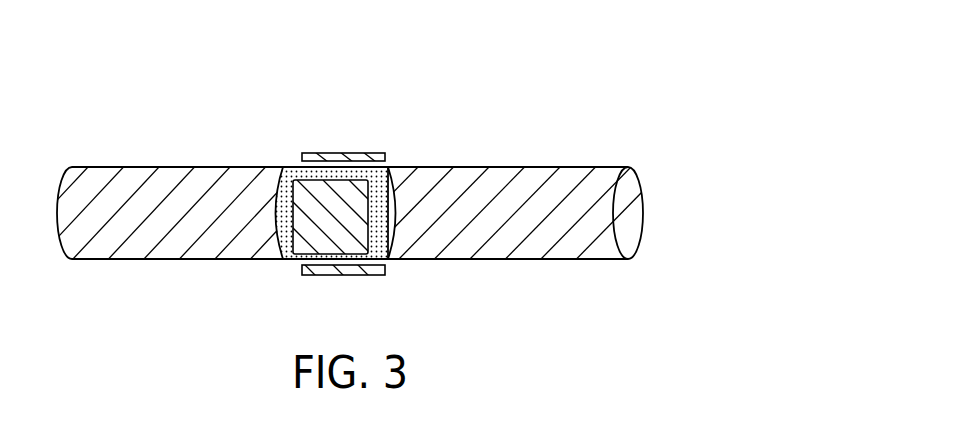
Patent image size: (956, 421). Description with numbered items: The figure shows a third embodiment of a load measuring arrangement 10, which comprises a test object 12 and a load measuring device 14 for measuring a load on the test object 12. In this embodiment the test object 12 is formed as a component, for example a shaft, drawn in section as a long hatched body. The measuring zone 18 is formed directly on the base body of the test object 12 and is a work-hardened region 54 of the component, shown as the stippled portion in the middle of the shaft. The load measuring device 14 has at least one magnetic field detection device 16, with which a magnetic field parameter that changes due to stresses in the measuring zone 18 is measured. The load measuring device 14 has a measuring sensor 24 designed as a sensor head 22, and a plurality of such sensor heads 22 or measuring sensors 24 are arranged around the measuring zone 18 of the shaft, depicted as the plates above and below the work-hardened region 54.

The load measuring arrangement 10 is at (634, 76).
The test object 12 is at (196, 157).
The load measuring device 14 is at (294, 122).
The magnetic field detection device 16 is at (343, 274).
The measuring zone 18 is at (332, 213).
The sensor head 22 is at (315, 243).
The measuring sensor 24 is at (337, 220).
The work-hardened region 54 is at (400, 159).